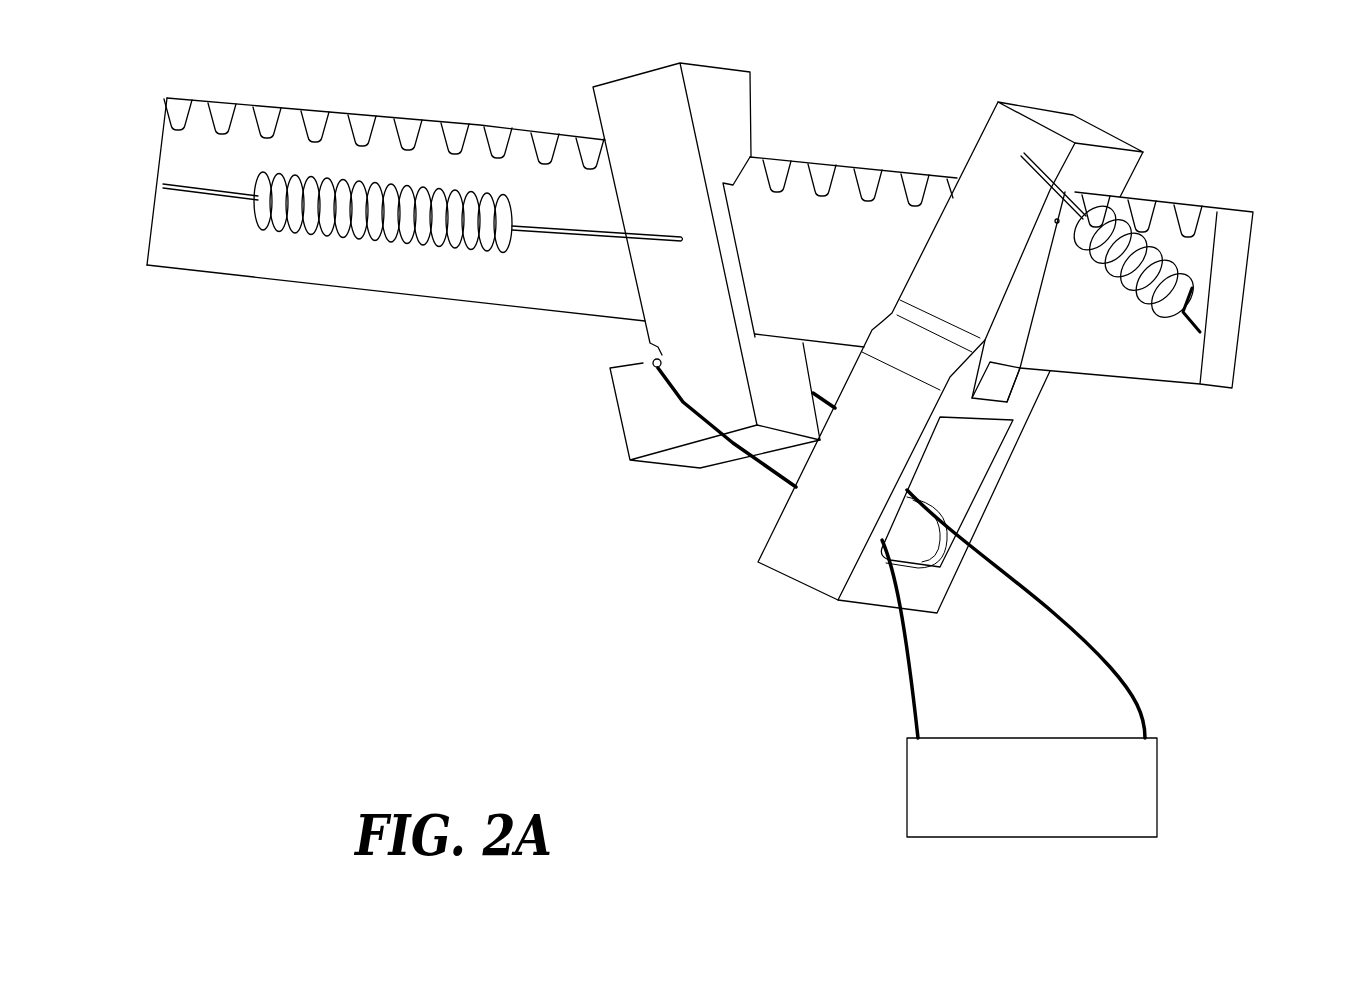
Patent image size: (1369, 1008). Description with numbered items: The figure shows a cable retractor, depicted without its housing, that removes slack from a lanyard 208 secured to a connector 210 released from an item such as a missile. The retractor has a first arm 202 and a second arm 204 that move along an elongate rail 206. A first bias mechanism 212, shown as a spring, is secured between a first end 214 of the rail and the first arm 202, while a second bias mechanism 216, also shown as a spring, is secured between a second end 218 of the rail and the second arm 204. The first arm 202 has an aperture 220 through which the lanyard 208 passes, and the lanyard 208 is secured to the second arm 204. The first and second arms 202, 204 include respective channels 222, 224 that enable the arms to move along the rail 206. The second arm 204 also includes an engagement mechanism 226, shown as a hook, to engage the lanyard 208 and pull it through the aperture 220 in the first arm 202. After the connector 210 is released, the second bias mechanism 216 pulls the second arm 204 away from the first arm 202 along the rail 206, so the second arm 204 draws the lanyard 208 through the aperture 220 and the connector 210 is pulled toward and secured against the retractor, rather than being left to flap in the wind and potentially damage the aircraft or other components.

The first arm 202 is at (973, 337).
The second arm 204 is at (650, 68).
The elongate rail 206 is at (1240, 347).
The lanyard 208 is at (1052, 600).
The connector 210 is at (1137, 785).
The first bias mechanism 212 is at (1205, 279).
The first end 214 is at (1255, 224).
The second bias mechanism 216 is at (296, 234).
The second end 218 is at (150, 154).
The aperture 220 is at (960, 455).
The channel 222 is at (1020, 378).
The channel 224 is at (727, 203).
The engagement mechanism 226 is at (645, 362).